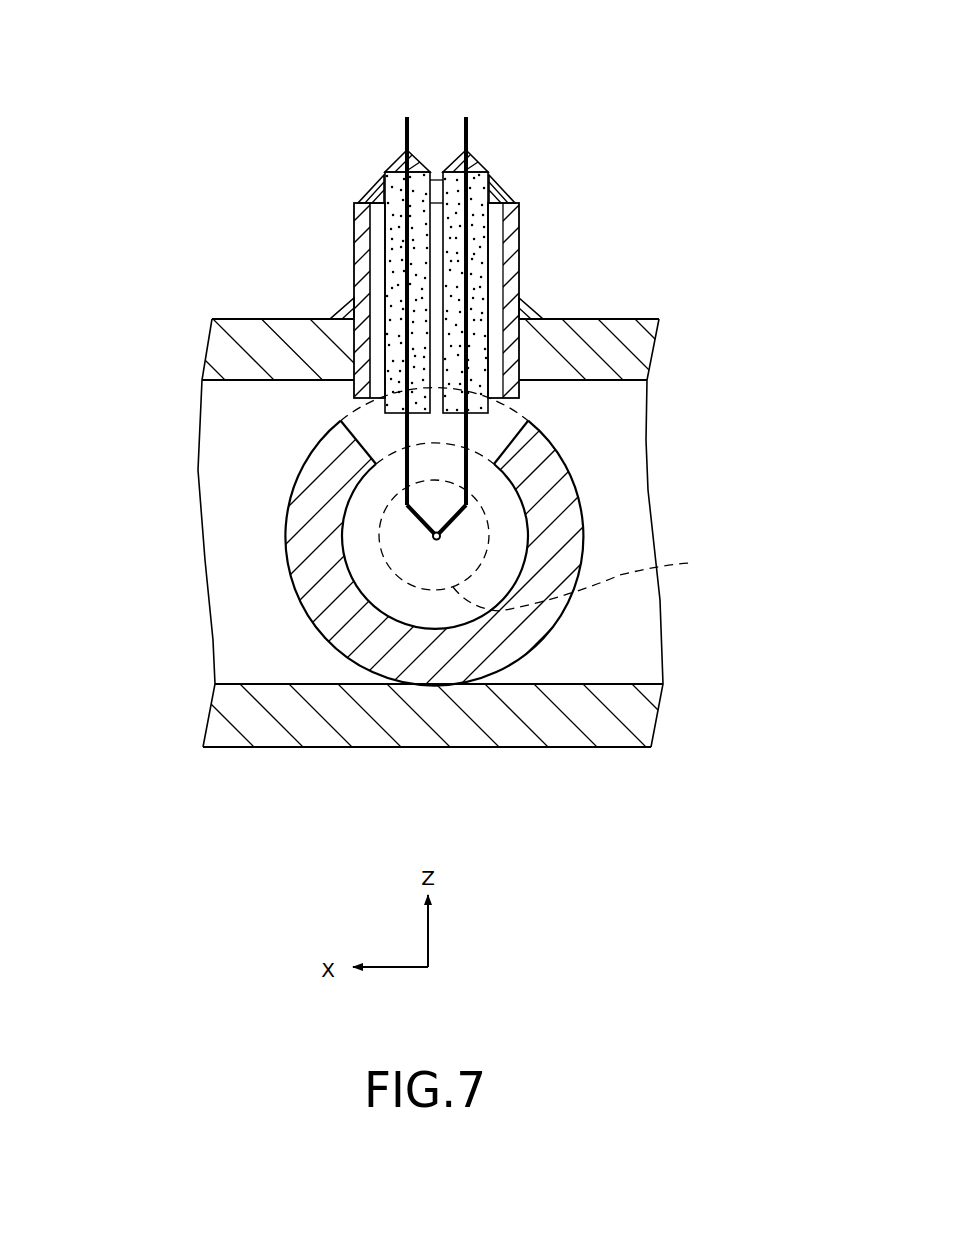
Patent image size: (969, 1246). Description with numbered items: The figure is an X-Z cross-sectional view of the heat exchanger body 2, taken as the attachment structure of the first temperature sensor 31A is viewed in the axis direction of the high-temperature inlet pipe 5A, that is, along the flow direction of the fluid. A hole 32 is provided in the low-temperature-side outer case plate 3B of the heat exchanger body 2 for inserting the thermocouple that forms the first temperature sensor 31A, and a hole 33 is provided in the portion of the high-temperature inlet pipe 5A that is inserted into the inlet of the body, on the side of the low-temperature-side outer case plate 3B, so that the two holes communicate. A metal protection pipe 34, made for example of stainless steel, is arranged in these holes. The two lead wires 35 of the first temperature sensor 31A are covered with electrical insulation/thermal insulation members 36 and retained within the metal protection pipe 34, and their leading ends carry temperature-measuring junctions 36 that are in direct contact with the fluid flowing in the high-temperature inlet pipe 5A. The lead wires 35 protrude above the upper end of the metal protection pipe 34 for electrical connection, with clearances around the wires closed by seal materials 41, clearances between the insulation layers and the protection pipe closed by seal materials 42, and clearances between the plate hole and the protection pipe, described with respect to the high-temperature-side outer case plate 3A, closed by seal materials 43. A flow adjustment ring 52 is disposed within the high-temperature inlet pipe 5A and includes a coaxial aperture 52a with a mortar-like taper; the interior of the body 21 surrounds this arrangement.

The heat exchanger body 2 is at (489, 475).
The body 21 is at (620, 431).
The high-temperature-side outer case plate 3A is at (212, 720).
The low-temperature-side outer case plate 3B is at (211, 345).
The high-temperature inlet pipe 5A is at (452, 535).
The flow adjustment ring 52 is at (358, 582).
The aperture 52a is at (599, 578).
The hole 33 is at (352, 435).
The metal protection pipe 34 is at (521, 247).
The hole 32 is at (376, 346).
The seal materials 43 is at (353, 300).
The seal materials 42 is at (365, 200).
The seal materials 41 is at (398, 158).
The electrical insulation/thermal insulation members 36 is at (386, 176).
The lead wires 35 is at (405, 120).
The first temperature sensor 31A is at (433, 275).